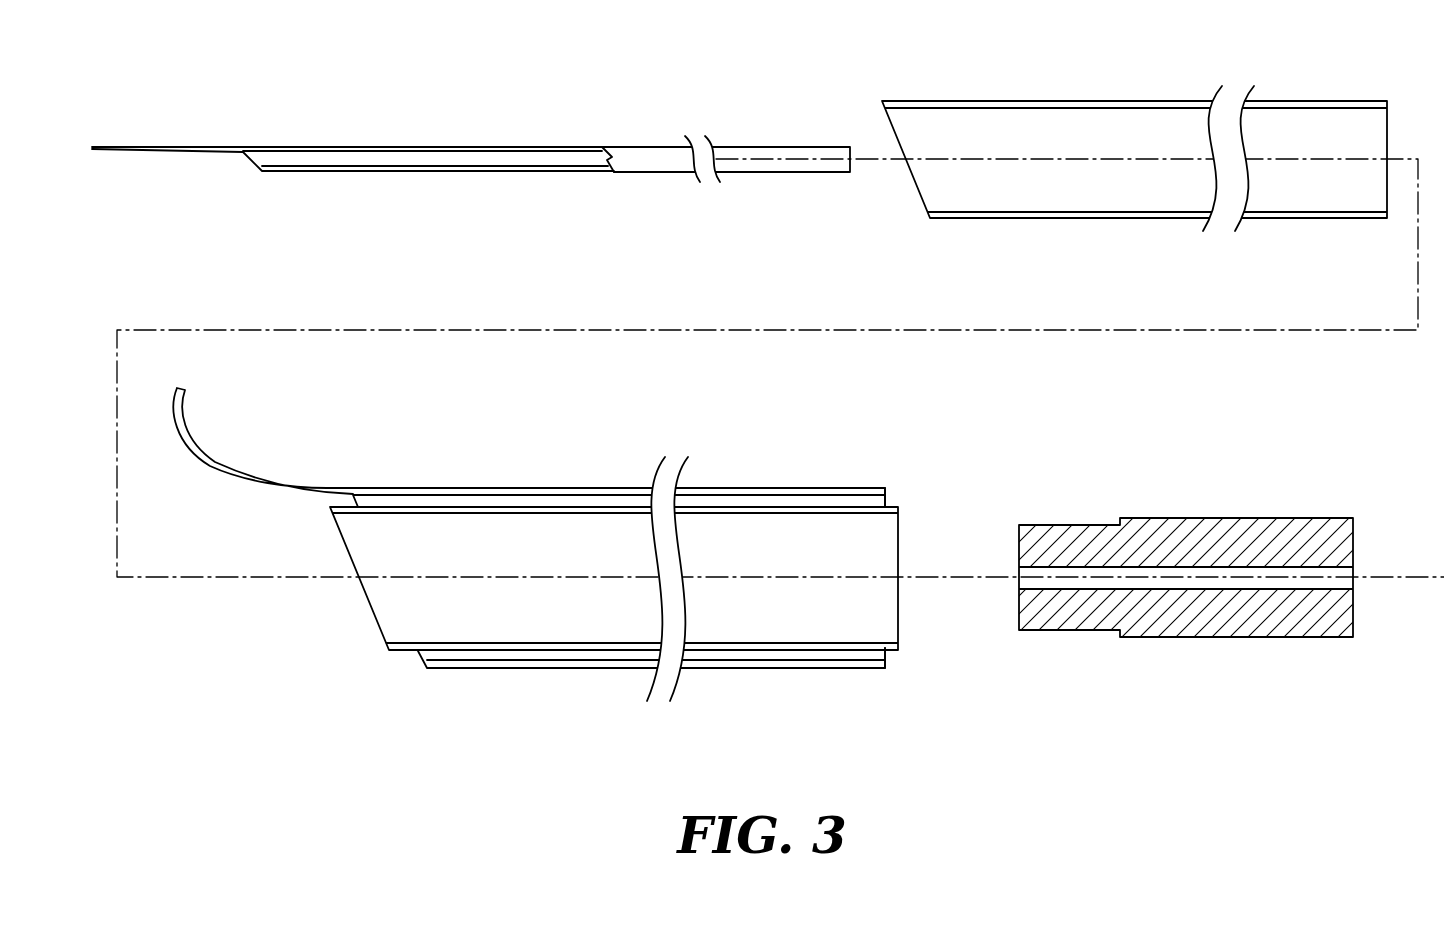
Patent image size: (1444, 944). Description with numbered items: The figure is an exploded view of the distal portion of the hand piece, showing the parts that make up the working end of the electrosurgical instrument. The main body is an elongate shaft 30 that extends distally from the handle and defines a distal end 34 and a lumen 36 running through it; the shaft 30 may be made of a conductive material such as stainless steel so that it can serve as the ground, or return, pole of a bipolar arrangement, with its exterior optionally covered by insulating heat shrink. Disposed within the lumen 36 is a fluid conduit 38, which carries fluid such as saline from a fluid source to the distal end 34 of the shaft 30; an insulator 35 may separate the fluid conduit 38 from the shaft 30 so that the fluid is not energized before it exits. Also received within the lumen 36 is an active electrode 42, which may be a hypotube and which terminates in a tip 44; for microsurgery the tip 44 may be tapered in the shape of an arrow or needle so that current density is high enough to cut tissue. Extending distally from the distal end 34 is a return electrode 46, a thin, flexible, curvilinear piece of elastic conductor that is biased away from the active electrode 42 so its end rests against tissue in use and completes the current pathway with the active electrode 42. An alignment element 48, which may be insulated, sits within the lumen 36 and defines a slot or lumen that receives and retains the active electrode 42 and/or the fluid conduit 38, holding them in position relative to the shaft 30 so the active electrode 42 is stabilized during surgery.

The elongate shaft 30 is at (808, 668).
The distal end 34 is at (447, 667).
The insulator 35 is at (792, 506).
The lumen 36 is at (1127, 140).
The fluid conduit 38 is at (790, 147).
The active electrode 42 is at (402, 146).
The tip 44 is at (175, 147).
The return electrode 46 is at (225, 463).
The alignment element 48 is at (1173, 637).